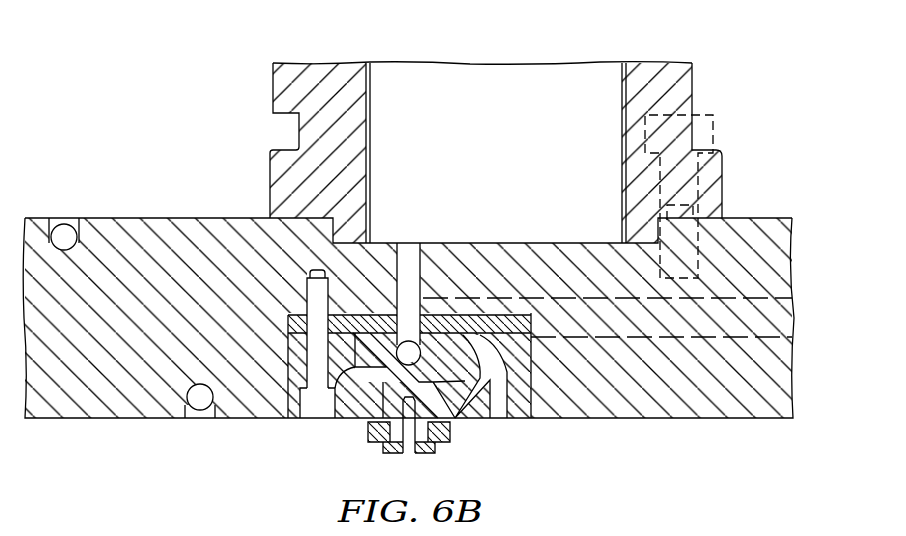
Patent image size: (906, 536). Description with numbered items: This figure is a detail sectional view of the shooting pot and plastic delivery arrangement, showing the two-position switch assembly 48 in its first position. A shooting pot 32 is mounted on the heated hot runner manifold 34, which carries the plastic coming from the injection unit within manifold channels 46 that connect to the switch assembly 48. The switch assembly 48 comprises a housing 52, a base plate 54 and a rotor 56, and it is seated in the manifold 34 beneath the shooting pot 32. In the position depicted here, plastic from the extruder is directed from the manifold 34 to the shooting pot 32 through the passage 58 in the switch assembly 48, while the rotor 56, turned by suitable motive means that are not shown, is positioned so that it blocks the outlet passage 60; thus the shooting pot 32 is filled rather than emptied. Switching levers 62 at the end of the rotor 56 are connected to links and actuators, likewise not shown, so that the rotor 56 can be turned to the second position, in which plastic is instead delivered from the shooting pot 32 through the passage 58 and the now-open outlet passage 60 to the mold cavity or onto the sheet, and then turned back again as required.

The shooting pot 32 is at (500, 147).
The hot runner manifold 34 is at (782, 238).
The manifold channels 46 is at (782, 319).
The two-position switch assembly 48 is at (430, 331).
The housing 52 is at (523, 416).
The base plate 54 is at (485, 316).
The rotor 56 is at (313, 417).
The passage 58 is at (411, 248).
The outlet passage 60 is at (498, 417).
The switching levers 62 is at (368, 435).